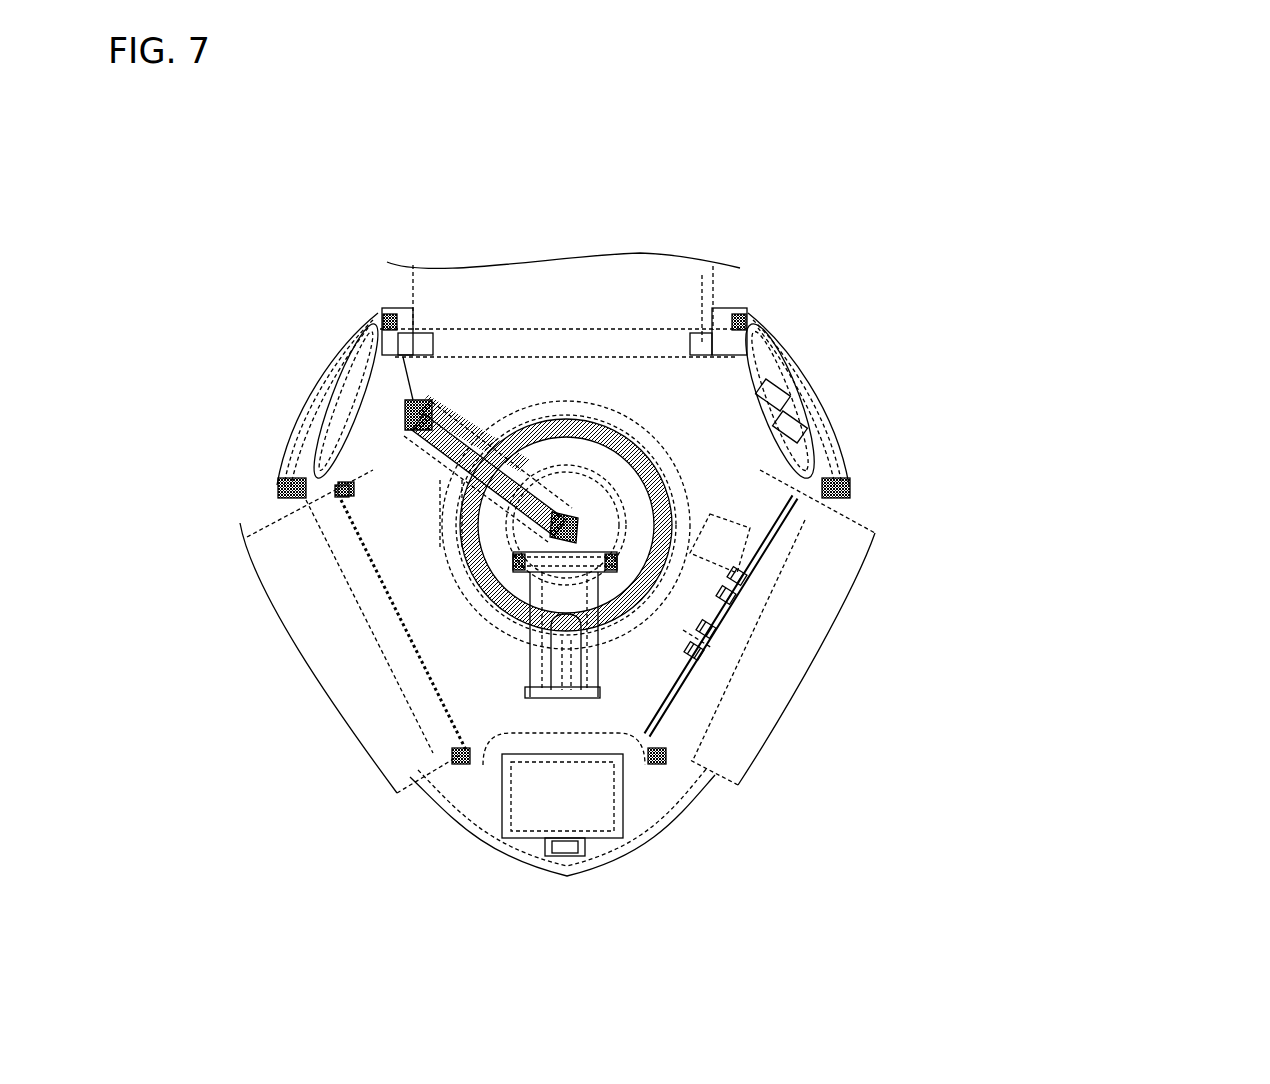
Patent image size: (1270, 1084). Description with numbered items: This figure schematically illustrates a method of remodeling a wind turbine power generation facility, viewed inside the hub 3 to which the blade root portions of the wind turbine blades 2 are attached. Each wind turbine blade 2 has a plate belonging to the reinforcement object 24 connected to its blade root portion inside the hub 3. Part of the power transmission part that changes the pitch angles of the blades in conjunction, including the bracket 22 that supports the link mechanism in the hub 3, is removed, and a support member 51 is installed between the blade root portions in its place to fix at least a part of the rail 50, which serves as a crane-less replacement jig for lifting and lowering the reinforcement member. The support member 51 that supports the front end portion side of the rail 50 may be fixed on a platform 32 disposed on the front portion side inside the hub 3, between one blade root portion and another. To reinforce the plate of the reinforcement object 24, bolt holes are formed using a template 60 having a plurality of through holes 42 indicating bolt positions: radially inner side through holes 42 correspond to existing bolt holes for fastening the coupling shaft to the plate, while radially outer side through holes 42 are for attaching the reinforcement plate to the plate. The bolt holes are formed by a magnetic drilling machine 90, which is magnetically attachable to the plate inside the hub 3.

The hub 3 is at (455, 164).
The wind turbine blade 2 is at (409, 296).
The bracket 22 is at (459, 446).
The reinforcement object 24 is at (670, 364).
The magnetic drilling machine 90 is at (729, 518).
The rail 50 is at (514, 562).
The support member 51 is at (528, 664).
The template 60 is at (687, 641).
The through holes 42 is at (785, 731).
The platform 32 is at (497, 812).